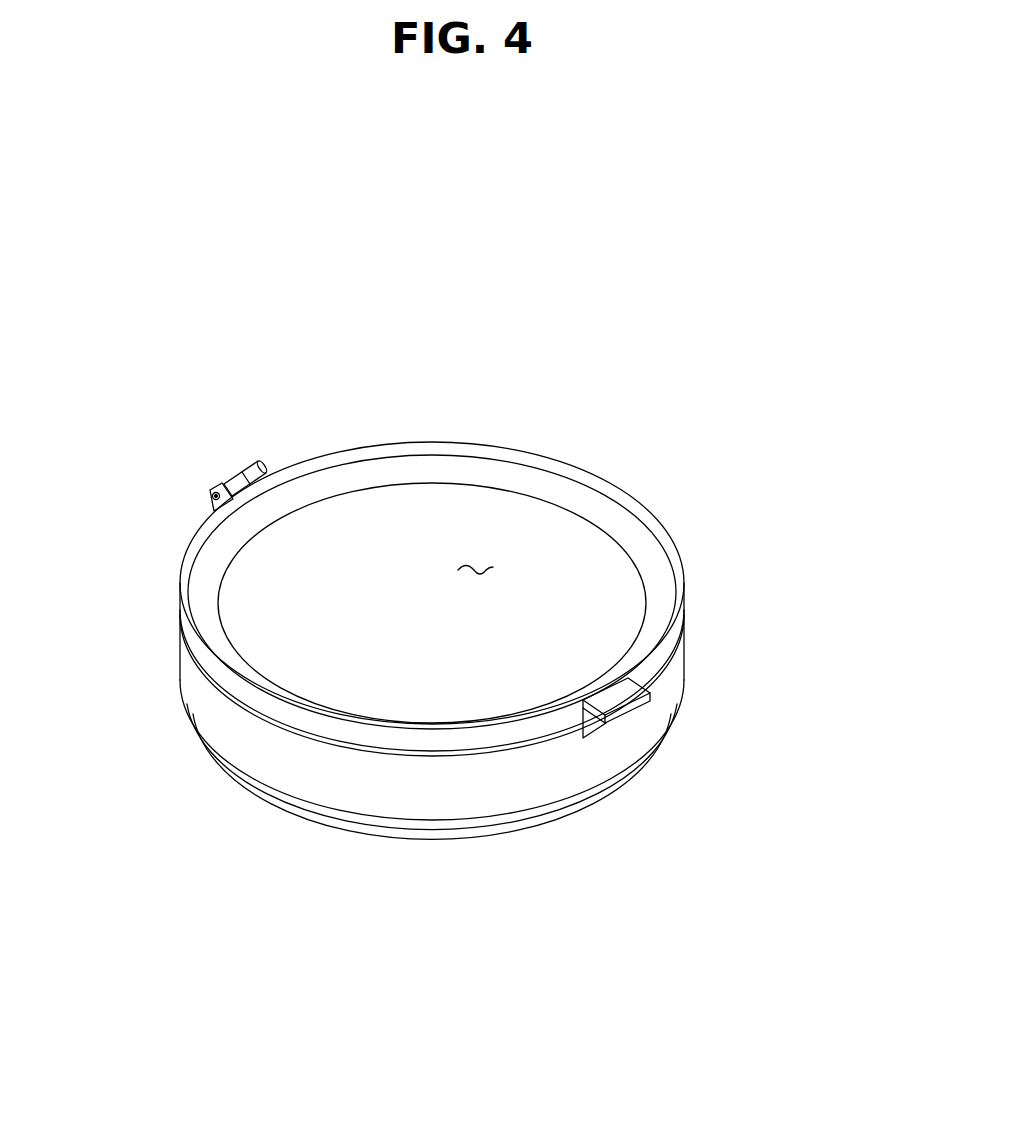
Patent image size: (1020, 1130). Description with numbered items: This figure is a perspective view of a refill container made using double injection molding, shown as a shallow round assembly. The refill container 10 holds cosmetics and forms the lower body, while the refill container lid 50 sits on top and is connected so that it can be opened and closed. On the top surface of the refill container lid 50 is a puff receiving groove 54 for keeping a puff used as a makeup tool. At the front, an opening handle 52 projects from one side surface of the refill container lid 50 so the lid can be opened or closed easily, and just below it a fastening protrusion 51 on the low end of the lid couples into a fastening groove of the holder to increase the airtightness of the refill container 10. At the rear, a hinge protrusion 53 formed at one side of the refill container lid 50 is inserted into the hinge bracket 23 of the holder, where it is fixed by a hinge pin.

The refill container 10 is at (592, 815).
The refill container lid 50 is at (662, 520).
The fastening protrusion 51 is at (600, 729).
The opening handle 52 is at (623, 694).
The hinge protrusion 53 is at (248, 464).
The puff receiving groove 54 is at (480, 563).
The hinge bracket 23 is at (212, 488).